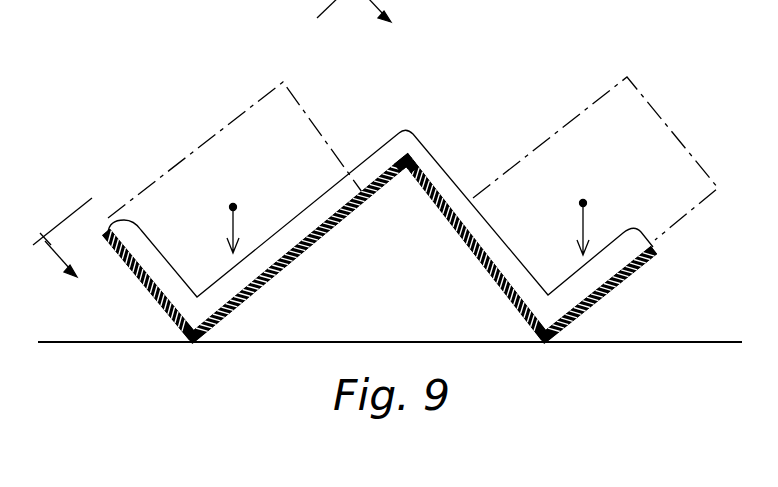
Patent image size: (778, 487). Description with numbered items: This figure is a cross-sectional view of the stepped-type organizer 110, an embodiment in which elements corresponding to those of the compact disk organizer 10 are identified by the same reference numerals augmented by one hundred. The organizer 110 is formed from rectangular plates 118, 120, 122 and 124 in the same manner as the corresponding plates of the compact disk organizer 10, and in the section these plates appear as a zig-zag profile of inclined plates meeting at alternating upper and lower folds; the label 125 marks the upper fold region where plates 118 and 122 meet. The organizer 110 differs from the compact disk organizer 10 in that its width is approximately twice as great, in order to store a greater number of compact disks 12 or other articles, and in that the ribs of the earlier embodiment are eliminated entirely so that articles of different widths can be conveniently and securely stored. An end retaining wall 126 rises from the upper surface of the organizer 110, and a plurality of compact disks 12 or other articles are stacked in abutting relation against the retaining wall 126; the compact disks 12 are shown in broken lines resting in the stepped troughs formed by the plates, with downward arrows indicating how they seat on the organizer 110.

The compact disk organizer 10 is at (225, 158).
The compact disks 12 is at (213, 136).
The stepped-type organizer 110 is at (136, 156).
The rectangular plate 118 is at (315, 238).
The rectangular plate 120 is at (150, 291).
The rectangular plate 122 is at (463, 236).
The rectangular plate 124 is at (619, 278).
The apex 125 is at (408, 160).
The end retaining wall 126 is at (373, 158).